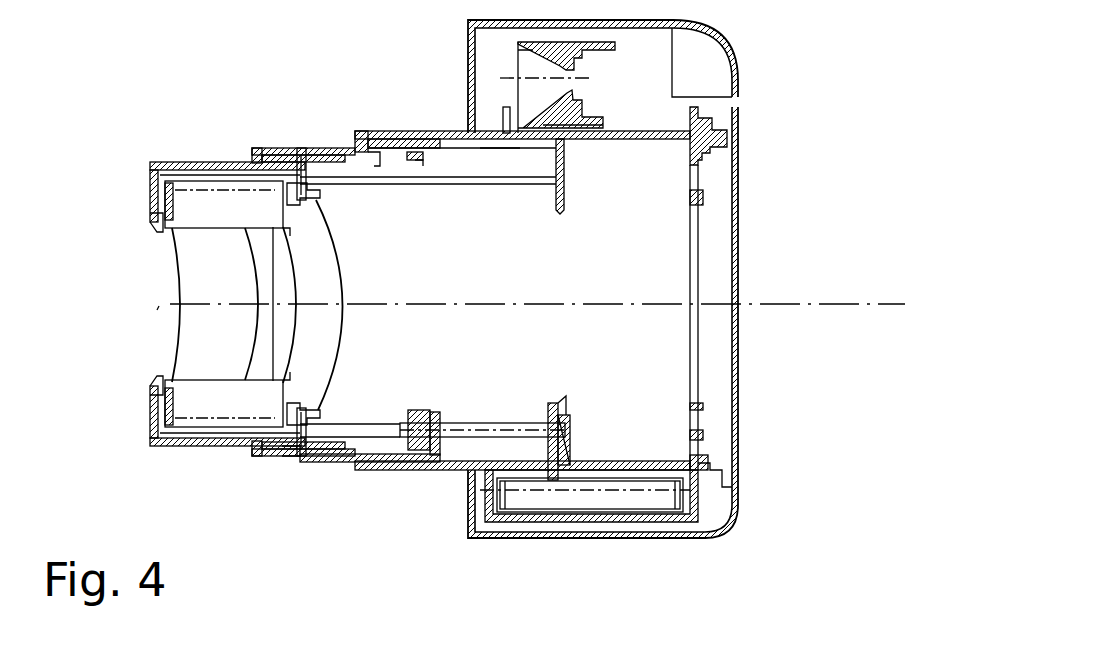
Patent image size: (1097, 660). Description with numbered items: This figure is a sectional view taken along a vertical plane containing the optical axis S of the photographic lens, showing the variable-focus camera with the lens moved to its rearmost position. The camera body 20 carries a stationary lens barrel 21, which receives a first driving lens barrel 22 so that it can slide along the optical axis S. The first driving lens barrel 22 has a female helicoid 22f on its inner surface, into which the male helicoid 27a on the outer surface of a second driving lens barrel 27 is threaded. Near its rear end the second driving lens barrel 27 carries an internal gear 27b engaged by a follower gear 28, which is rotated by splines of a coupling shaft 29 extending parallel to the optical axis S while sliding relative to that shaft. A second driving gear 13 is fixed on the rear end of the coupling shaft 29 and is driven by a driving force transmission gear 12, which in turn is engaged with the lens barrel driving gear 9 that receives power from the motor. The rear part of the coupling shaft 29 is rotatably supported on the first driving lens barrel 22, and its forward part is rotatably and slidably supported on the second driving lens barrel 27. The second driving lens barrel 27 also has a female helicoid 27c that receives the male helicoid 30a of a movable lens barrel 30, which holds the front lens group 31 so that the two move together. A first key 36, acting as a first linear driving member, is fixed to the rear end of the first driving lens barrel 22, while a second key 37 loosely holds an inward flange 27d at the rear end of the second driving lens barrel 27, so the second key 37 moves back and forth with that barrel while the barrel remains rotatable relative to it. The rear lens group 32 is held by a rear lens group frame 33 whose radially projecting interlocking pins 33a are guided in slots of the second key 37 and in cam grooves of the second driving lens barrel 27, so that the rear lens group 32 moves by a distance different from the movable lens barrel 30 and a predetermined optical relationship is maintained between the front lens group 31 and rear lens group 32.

The lens barrel driving gear 9 is at (595, 500).
The driving force transmission gear 12 is at (572, 437).
The second driving gear 13 is at (555, 405).
The camera body 20 is at (738, 150).
The stationary lens barrel 21 is at (637, 145).
The first driving lens barrel 22 is at (452, 147).
The female helicoid 22f is at (505, 148).
The second driving lens barrel 27 is at (330, 150).
The male helicoid 27a is at (407, 137).
The internal gear 27b is at (420, 158).
The female helicoid 27c is at (352, 458).
The flange 27d is at (438, 420).
The follower gear 28 is at (420, 415).
The coupling shaft 29 is at (505, 430).
The movable lens barrel 30 is at (210, 163).
The male helicoid 30a is at (290, 457).
The front lens group 31 is at (187, 268).
The rear lens group 32 is at (340, 320).
The rear lens group frame 33 is at (318, 193).
The interlocking pins 33a is at (288, 148).
The first key 36 is at (527, 148).
The second key 37 is at (375, 165).
The optical axis S is at (157, 310).